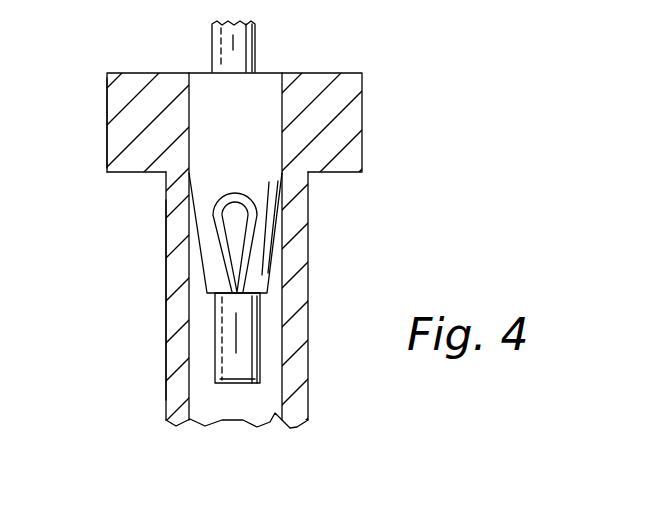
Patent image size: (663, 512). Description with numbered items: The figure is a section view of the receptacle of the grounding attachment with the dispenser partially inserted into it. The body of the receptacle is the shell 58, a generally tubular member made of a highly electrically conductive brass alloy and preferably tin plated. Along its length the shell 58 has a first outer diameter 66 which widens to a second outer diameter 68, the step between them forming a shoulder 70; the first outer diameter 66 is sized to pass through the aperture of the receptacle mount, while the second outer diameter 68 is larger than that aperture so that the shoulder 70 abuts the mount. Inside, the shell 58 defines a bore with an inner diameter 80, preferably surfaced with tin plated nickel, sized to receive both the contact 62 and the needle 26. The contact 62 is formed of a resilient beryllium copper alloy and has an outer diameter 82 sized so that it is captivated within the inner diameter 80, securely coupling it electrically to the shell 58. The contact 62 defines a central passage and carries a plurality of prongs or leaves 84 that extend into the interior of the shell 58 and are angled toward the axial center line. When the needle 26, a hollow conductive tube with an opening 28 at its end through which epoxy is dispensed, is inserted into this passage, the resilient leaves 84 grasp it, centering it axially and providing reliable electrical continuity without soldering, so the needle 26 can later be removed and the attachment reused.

The needle 26 is at (255, 38).
The opening 28 is at (228, 384).
The shell 58 is at (318, 305).
The contact 62 is at (213, 90).
The first outer diameter 66 is at (166, 293).
The second outer diameter 68 is at (108, 93).
The shoulder 70 is at (125, 175).
The inner diameter 80 is at (284, 406).
The outer diameter 82 is at (284, 136).
The leaves 84 is at (268, 262).